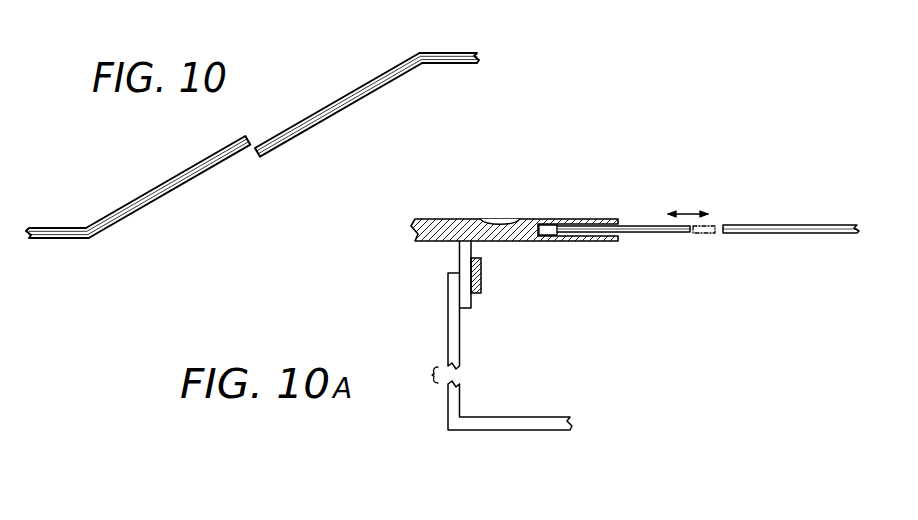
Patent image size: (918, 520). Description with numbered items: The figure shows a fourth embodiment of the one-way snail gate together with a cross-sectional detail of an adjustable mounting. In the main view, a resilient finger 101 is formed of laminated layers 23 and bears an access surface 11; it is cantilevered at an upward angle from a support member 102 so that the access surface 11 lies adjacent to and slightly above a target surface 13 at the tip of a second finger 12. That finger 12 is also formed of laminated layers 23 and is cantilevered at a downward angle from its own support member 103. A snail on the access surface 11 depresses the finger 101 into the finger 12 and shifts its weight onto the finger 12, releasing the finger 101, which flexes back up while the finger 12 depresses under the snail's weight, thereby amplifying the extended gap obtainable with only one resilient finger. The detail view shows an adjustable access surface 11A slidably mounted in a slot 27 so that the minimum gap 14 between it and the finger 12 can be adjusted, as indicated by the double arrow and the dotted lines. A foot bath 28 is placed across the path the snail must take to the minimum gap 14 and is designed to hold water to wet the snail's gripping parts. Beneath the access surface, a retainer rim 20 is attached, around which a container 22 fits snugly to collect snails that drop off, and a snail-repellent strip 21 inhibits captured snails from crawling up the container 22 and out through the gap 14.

In FIG. 10, the resilient finger 101 is at (146, 190).
In FIG. 10, the support member 102 is at (74, 239).
In FIG. 10, the support member 103 is at (438, 63).
In FIG. 10, the access surface 11 is at (143, 188).
In FIG. 10, the finger 12 is at (367, 93).
In FIG. 10A, the finger 12 is at (812, 222).
In FIG. 10, the target surface 13 is at (262, 143).
In FIG. 10A, the target surface 13 is at (747, 223).
In FIG. 10, the laminated layers 23 is at (176, 176).
In FIG. 10A, the adjustable access surface 11A is at (648, 223).
In FIG. 10A, the minimum gap 14 is at (722, 222).
In FIG. 10A, the retainer rim 20 is at (458, 253).
In FIG. 10A, the snail-repellent strip 21 is at (481, 280).
In FIG. 10A, the container 22 is at (448, 328).
In FIG. 10A, the slot 27 is at (541, 243).
In FIG. 10A, the foot bath 28 is at (494, 220).